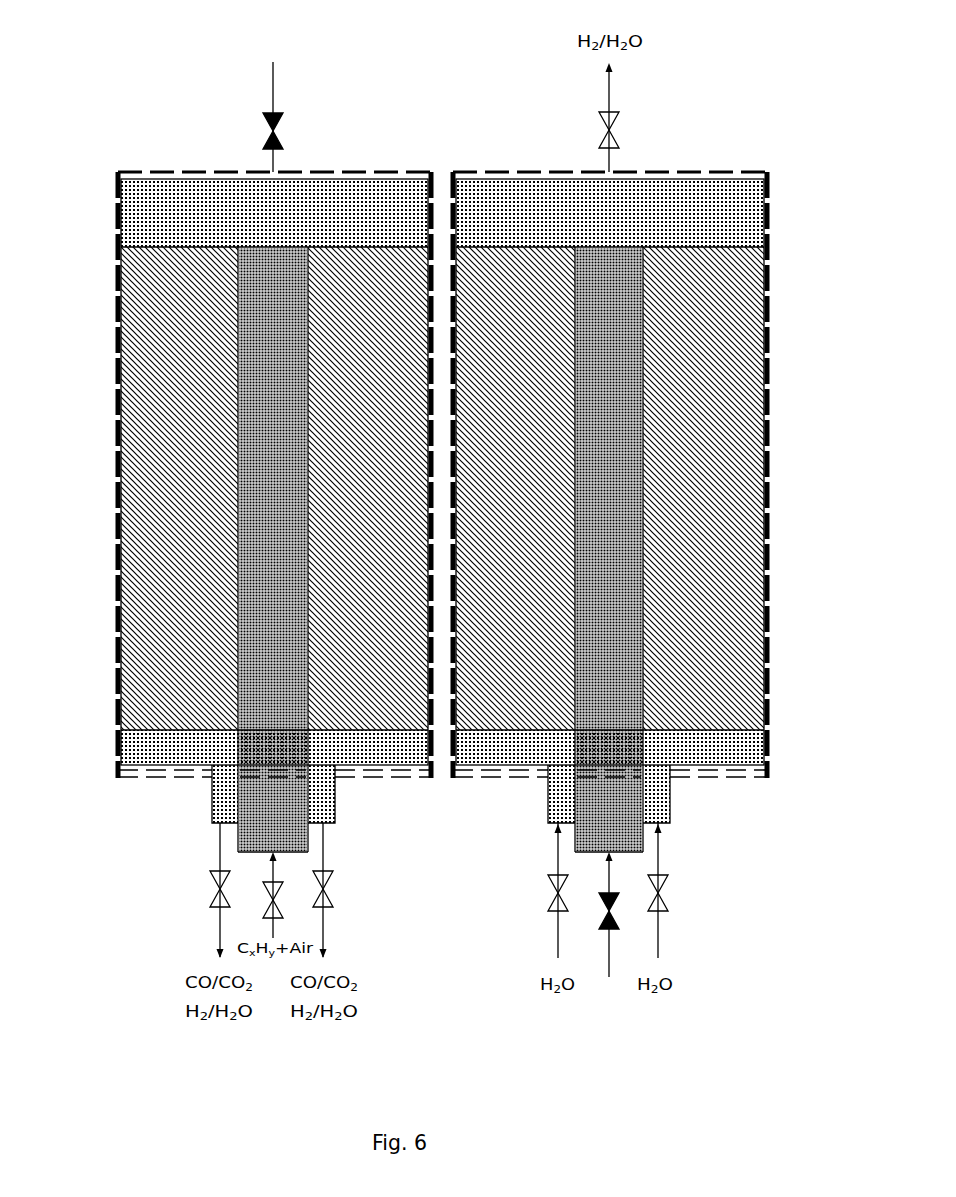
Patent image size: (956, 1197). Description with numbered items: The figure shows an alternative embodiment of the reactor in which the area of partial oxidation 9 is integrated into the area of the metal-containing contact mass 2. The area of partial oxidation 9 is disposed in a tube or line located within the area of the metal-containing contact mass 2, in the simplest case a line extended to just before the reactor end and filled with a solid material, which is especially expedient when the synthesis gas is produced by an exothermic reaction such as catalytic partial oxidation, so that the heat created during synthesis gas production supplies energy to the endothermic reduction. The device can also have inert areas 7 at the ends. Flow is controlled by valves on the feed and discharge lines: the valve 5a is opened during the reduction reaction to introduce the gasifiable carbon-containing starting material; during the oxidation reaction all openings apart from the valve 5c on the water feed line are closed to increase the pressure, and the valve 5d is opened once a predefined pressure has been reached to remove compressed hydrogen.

The metal-containing contact mass 2 is at (352, 344).
The area of partial oxidation 9 is at (267, 512).
The inert areas 7 is at (276, 210).
The valve 5a is at (209, 887).
The valve 5c is at (262, 126).
The valve 5d is at (244, 922).